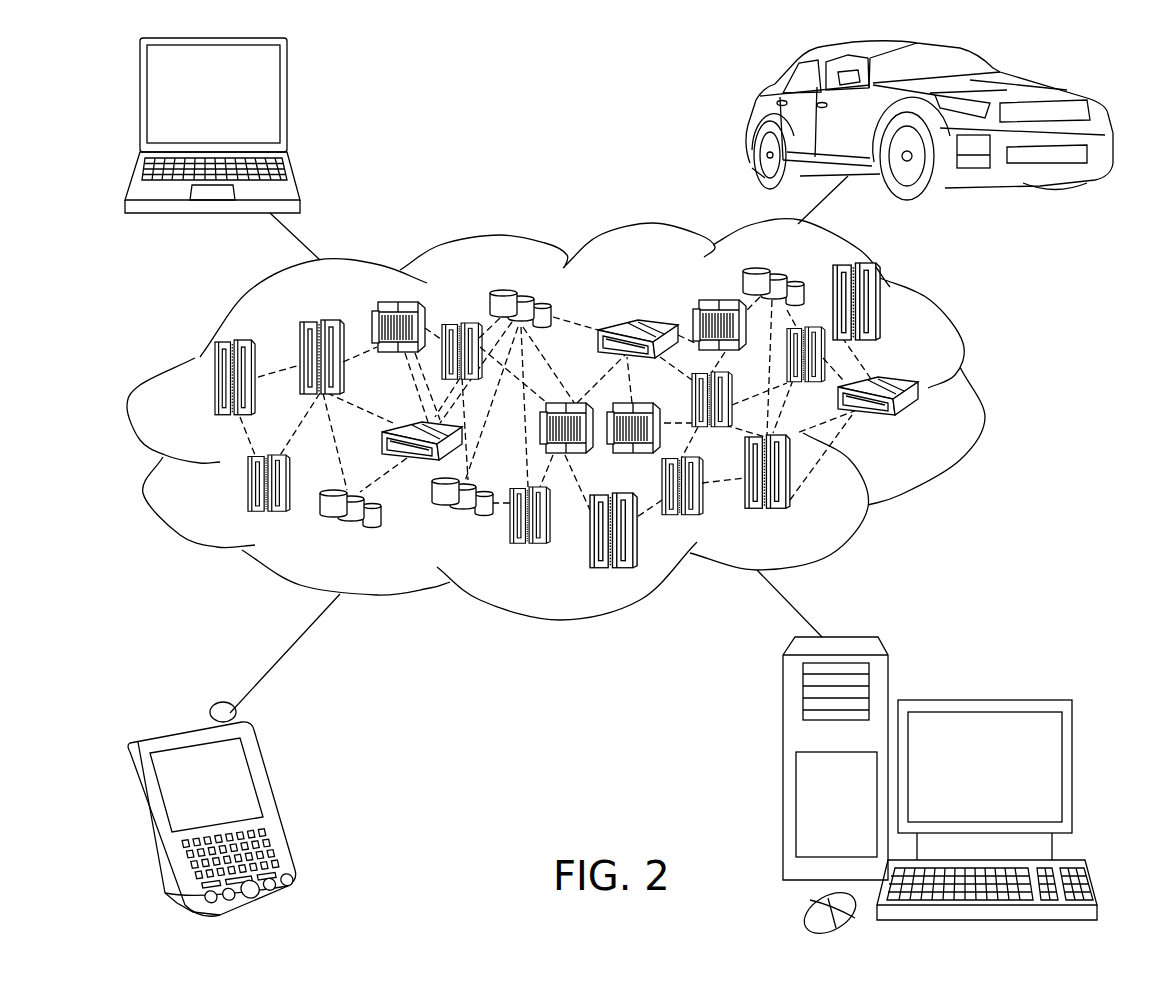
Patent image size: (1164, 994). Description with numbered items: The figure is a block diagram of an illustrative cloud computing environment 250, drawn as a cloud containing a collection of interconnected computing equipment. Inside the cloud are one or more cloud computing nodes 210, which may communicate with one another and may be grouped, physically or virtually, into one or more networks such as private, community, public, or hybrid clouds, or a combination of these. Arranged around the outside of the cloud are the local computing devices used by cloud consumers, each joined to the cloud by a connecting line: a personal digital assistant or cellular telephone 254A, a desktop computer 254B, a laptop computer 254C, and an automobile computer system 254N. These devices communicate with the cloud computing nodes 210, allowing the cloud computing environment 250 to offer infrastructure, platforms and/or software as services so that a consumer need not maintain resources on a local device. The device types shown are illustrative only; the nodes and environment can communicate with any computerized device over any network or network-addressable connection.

The cloud computing environment 250 is at (595, 419).
The cloud computing nodes 210 is at (925, 427).
The personal digital assistant or cellular telephone 254A is at (276, 798).
The desktop computer 254B is at (980, 698).
The laptop computer 254C is at (287, 102).
The automobile computer system 254N is at (749, 121).